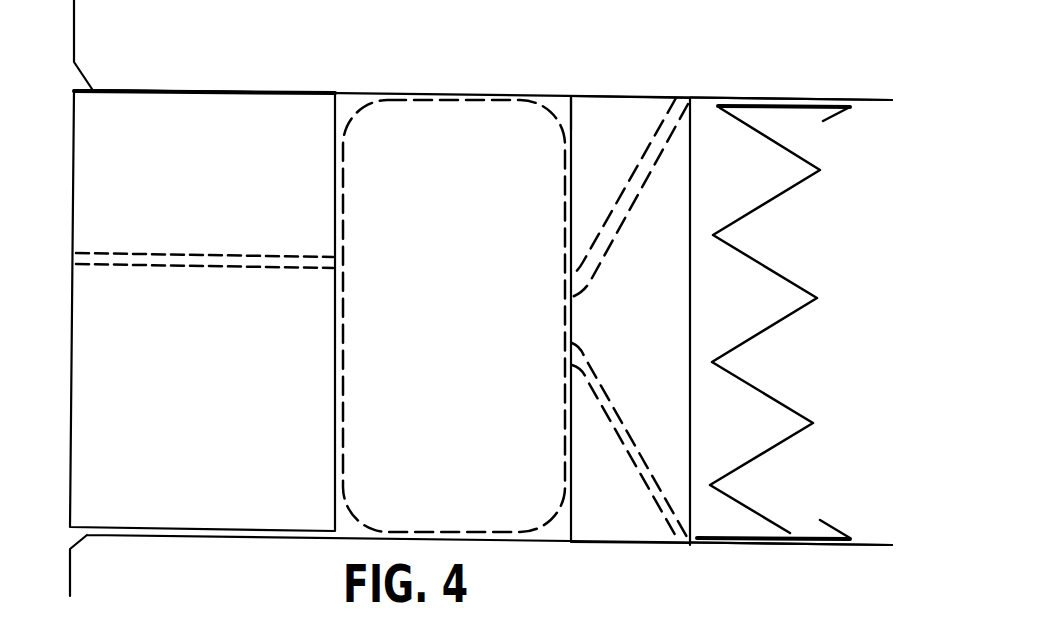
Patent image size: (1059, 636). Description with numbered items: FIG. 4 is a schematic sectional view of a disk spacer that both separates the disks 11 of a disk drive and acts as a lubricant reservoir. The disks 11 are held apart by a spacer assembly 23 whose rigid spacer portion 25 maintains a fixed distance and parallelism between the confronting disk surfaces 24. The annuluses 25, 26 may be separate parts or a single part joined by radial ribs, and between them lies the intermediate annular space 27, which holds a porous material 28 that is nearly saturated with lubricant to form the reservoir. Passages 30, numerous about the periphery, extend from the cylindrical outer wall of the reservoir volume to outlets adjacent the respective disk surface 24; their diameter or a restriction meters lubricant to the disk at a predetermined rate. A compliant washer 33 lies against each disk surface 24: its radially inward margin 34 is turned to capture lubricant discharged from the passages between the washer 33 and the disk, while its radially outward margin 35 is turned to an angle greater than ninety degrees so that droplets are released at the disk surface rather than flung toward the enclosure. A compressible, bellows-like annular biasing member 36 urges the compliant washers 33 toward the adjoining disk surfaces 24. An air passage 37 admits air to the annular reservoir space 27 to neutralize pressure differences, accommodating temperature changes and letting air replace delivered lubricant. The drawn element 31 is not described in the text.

The disk 11 is at (153, 53).
The spacer assembly 23 is at (70, 356).
The disk surface 24 is at (878, 102).
The spacer portion 25 is at (213, 440).
The annulus 26 is at (641, 340).
The intermediate annular space 27 is at (552, 541).
The porous material 28 is at (455, 340).
The passage 30 is at (653, 135).
The fold line 31 is at (568, 112).
The compliant washer 33 is at (777, 97).
The radially inward margin 34 is at (701, 97).
The radially outward margin 35 is at (842, 112).
The annular biasing member 36 is at (800, 316).
The air passage 37 is at (119, 253).